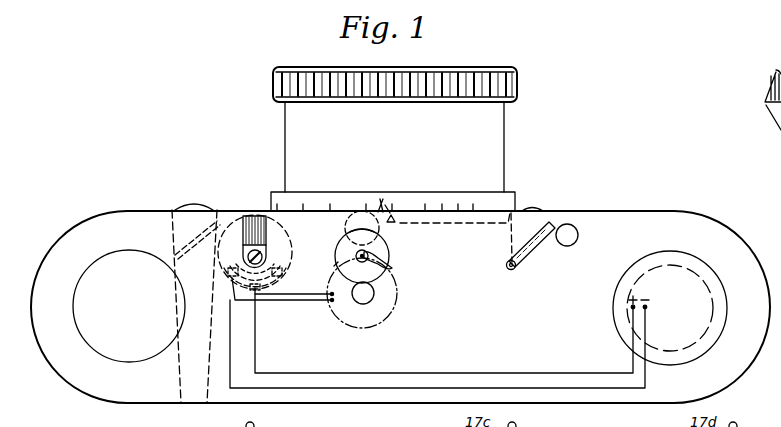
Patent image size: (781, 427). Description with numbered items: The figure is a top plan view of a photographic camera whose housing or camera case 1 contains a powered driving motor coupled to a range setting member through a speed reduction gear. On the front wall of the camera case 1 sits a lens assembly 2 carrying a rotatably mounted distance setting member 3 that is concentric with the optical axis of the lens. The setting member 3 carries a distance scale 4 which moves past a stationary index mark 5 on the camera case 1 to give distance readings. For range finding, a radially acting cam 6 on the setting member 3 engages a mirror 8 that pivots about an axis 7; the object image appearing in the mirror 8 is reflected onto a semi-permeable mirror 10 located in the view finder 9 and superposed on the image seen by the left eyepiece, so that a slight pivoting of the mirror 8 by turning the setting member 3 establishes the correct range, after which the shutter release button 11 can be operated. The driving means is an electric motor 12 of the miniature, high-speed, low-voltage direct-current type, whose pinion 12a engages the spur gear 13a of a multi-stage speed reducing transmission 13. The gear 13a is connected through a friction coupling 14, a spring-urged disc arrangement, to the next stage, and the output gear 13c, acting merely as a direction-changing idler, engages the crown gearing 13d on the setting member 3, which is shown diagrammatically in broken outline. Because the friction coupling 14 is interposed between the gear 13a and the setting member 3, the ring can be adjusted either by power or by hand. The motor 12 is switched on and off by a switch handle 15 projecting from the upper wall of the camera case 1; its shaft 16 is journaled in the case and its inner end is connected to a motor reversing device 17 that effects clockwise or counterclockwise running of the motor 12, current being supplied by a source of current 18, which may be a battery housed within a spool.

The camera case 1 is at (703, 253).
The lens assembly 2 is at (487, 153).
The distance setting member 3 is at (500, 205).
The distance scale 4 is at (376, 202).
The index mark 5 is at (392, 223).
The cam 6 is at (508, 225).
The axis 7 is at (512, 270).
The mirror 8 is at (533, 247).
The view finder 9 is at (170, 232).
The semi-permeable mirror 10 is at (187, 207).
The shutter release button 11 is at (570, 232).
The electric motor 12 is at (387, 314).
The pinion 12a is at (364, 305).
The speed reducing transmission 13 is at (403, 254).
The spur gear 13a is at (340, 259).
The output gear 13c is at (385, 212).
The crown gearing 13d is at (340, 212).
The friction coupling 14 is at (395, 267).
The switch handle 15 is at (263, 258).
The shaft 16 is at (263, 250).
The motor reversing device 17 is at (238, 220).
The source of current 18 is at (640, 290).